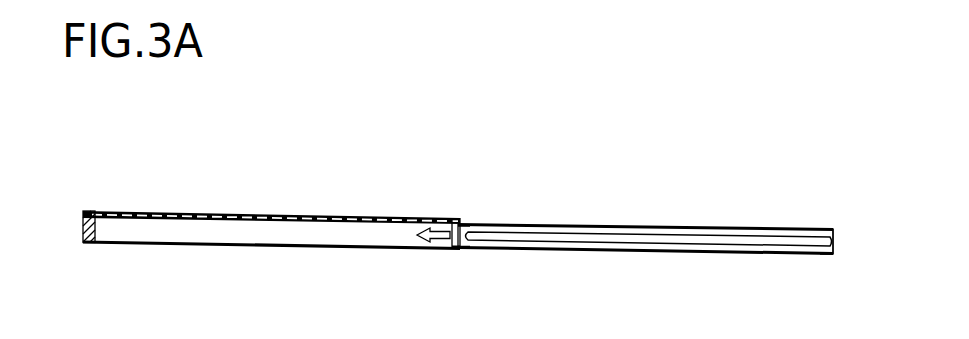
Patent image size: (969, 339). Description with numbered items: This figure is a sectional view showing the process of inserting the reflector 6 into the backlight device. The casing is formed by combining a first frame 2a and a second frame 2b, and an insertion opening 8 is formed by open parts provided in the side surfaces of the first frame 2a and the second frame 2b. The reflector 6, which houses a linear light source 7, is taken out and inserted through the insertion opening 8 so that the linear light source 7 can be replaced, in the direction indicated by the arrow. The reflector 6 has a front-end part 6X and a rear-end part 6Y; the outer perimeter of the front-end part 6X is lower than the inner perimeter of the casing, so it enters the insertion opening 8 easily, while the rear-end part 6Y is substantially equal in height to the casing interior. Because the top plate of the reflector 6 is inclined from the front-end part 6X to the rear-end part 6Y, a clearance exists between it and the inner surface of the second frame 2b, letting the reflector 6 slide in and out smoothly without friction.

The first frame 2a is at (234, 244).
The second frame 2b is at (208, 213).
The reflector 6 is at (657, 225).
The front-end part 6X is at (450, 218).
The rear-end part 6Y is at (835, 229).
The linear light source 7 is at (603, 244).
The insertion opening 8 is at (460, 220).